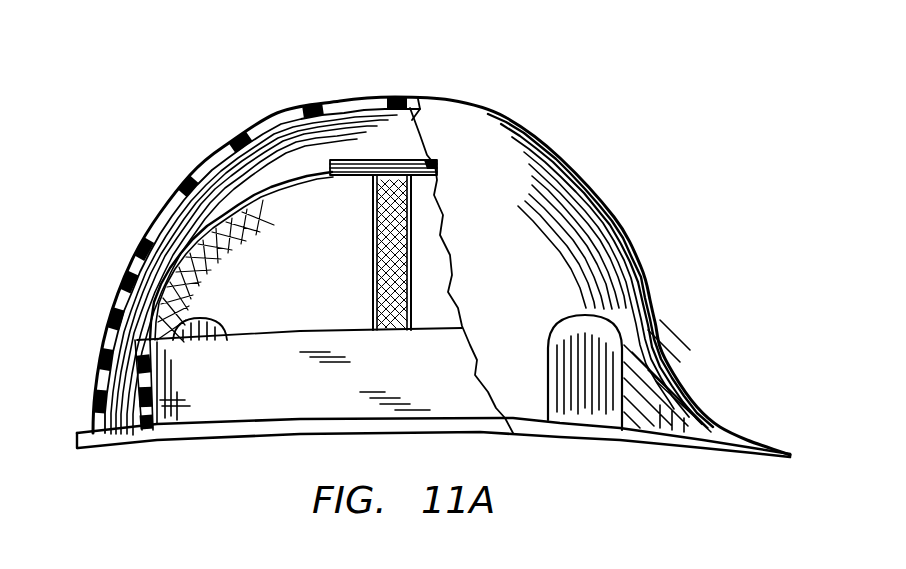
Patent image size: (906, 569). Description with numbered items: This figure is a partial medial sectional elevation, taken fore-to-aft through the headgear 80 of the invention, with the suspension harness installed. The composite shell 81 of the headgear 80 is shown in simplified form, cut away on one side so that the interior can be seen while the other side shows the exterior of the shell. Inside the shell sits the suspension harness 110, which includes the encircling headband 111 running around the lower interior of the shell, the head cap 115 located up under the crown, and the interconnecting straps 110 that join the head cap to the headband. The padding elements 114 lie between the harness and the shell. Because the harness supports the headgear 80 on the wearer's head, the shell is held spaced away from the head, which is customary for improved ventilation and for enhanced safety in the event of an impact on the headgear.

The headgear 80 is at (505, 165).
The composite shell 81 is at (203, 170).
The suspension harness 110 is at (356, 188).
The encircling headband 111 is at (242, 383).
The padding 114 is at (198, 250).
The head cap 115 is at (397, 165).